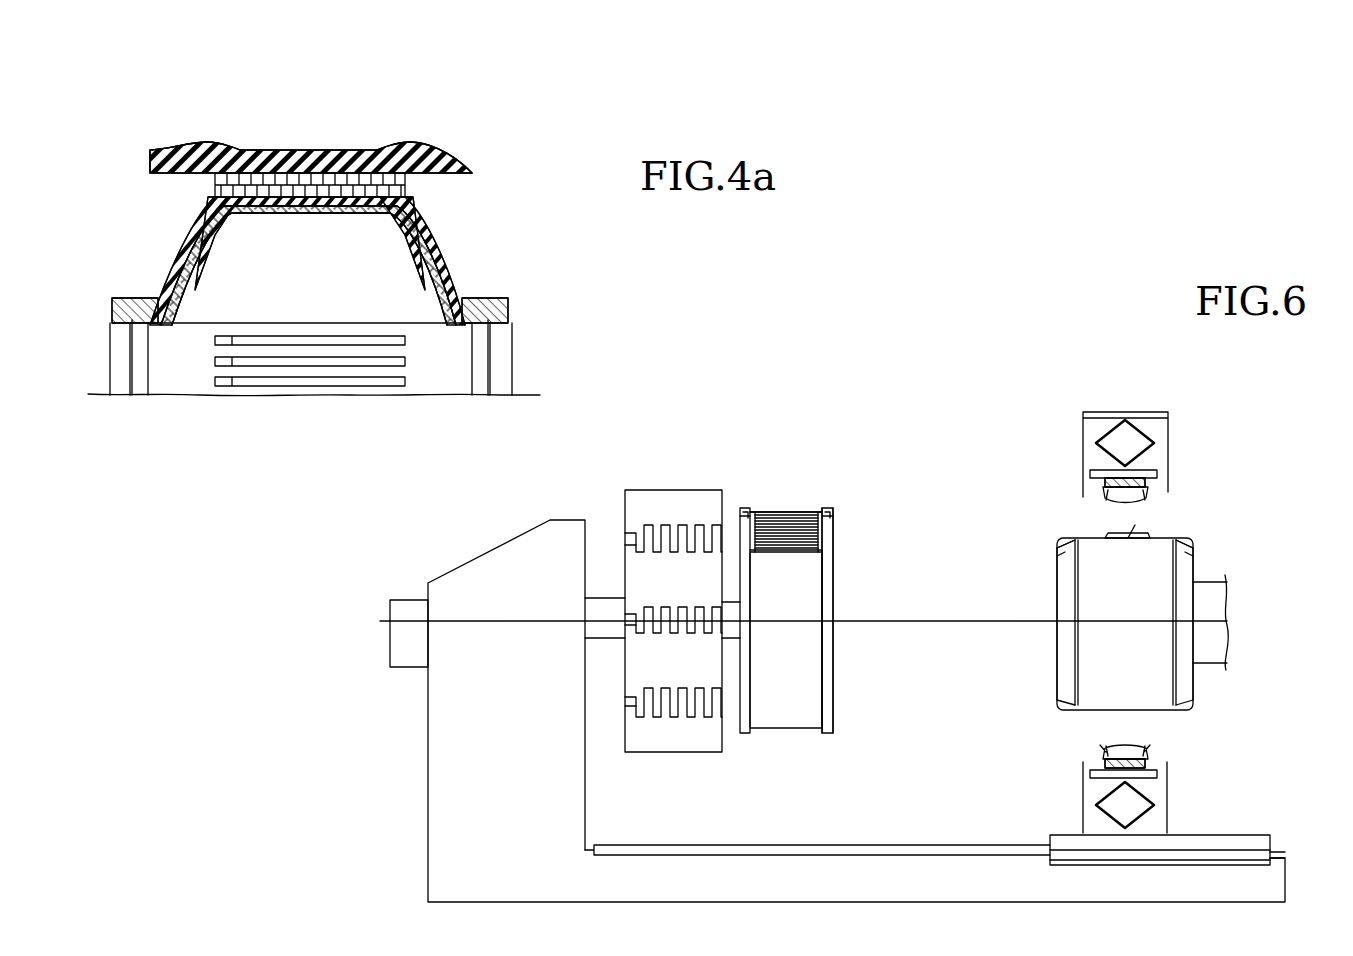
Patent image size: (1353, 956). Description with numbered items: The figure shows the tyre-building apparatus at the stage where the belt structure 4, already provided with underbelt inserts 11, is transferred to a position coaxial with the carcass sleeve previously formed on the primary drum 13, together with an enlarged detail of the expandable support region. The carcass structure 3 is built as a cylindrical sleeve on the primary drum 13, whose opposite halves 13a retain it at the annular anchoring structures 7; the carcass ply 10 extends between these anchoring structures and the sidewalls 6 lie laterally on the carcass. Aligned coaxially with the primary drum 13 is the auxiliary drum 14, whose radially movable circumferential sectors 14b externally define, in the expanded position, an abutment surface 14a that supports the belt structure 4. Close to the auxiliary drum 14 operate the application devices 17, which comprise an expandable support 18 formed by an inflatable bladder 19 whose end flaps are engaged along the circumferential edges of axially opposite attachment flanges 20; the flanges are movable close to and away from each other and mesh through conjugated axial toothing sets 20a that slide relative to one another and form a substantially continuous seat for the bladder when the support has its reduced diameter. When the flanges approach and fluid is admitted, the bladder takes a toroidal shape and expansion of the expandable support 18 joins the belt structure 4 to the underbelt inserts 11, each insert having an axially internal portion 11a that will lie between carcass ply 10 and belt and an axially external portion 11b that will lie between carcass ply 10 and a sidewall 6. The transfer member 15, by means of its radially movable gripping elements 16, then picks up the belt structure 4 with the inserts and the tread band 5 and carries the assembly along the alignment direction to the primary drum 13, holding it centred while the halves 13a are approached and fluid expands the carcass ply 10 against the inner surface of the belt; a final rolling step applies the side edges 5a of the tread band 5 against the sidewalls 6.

In FIG. 6, the carcass structure 3 is at (1158, 528).
In FIG. 4A, the belt structure 4 is at (400, 189).
In FIG. 6, the belt structure 4 is at (1103, 492).
In FIG. 4A, the tread band 5 is at (287, 162).
In FIG. 6, the tread band 5 is at (1103, 482).
In FIG. 4A, the side edges of the tread band 5a is at (150, 170).
In FIG. 6, the sidewalls 6 is at (1060, 537).
In FIG. 6, the annular anchoring structures 7 is at (1060, 546).
In FIG. 6, the carcass ply 10 is at (1128, 538).
In FIG. 4A, the underbelt insert 11 is at (200, 212).
In FIG. 6, the underbelt insert 11 is at (1100, 750).
In FIG. 4A, the axially internal portion 11a is at (210, 200).
In FIG. 4A, the axially external portion 11b is at (196, 250).
In FIG. 6, the primary drum 13 is at (1055, 603).
In FIG. 6, the halves of the primary drum 13a is at (1185, 600).
In FIG. 6, the auxiliary drum 14 is at (578, 613).
In FIG. 6, the abutment surface 14a is at (665, 495).
In FIG. 6, the circumferential sectors 14b is at (640, 663).
In FIG. 6, the transfer member 15 is at (1170, 815).
In FIG. 6, the gripping elements 16 is at (1160, 465).
In FIG. 6, the application devices 17 is at (855, 682).
In FIG. 6, the expandable support 18 is at (841, 598).
In FIG. 4A, the inflatable bladder 19 is at (437, 272).
In FIG. 6, the inflatable bladder 19 is at (818, 535).
In FIG. 4A, the attachment flanges 20 is at (192, 382).
In FIG. 6, the attachment flanges 20 is at (757, 516).
In FIG. 4A, the axial toothing sets 20a is at (287, 376).
In FIG. 6, the axial toothing sets 20a is at (780, 518).